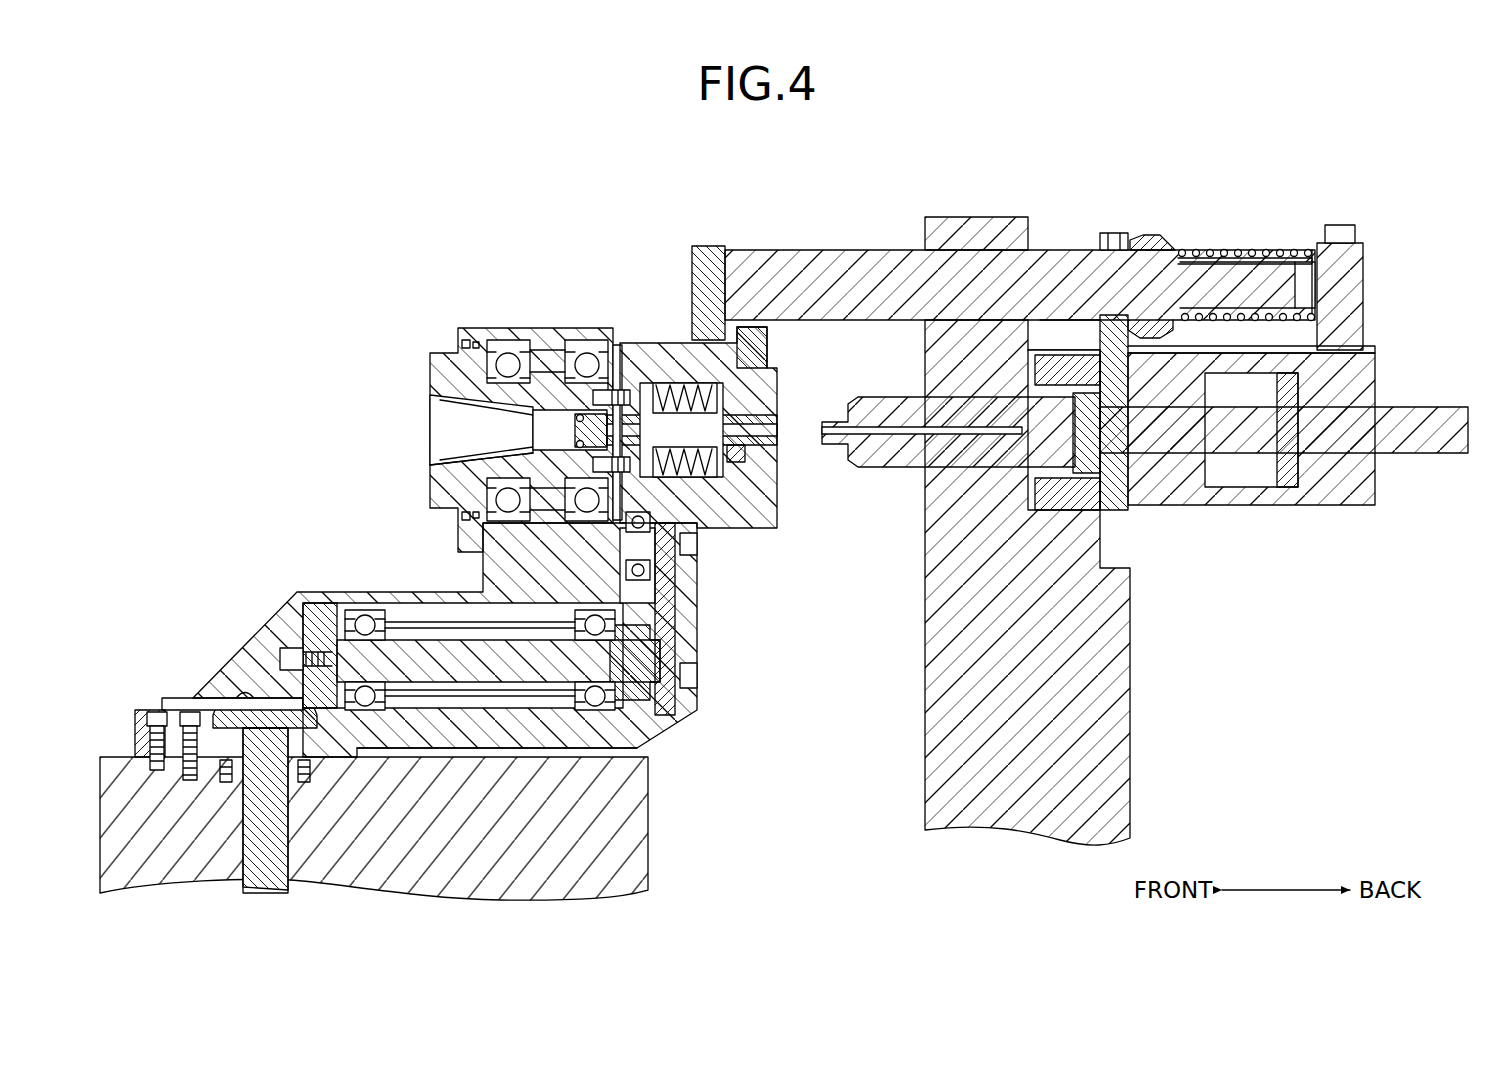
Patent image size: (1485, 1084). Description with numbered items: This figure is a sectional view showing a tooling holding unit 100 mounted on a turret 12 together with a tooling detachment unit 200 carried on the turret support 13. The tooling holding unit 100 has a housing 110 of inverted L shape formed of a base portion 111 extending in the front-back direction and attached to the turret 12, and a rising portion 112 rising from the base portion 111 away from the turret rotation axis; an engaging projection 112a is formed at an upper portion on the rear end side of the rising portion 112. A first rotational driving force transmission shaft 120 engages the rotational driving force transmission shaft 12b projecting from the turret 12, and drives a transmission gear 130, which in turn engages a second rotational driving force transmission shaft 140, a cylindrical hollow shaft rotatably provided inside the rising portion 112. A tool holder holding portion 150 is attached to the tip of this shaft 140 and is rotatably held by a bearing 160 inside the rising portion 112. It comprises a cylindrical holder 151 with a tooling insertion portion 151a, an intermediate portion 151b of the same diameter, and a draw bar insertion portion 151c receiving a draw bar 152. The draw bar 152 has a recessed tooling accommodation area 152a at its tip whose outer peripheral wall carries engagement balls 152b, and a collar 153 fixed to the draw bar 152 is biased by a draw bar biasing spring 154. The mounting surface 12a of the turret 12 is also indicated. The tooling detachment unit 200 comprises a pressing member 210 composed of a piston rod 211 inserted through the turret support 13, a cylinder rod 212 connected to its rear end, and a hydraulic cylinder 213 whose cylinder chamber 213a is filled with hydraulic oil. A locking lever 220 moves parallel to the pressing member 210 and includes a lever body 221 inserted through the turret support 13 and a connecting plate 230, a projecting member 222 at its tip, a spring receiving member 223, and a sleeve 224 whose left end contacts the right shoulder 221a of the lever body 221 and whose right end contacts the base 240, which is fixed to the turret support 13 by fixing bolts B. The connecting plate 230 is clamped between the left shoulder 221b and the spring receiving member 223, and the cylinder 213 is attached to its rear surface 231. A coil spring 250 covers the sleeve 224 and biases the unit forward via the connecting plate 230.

The tooling holding unit 100 is at (470, 186).
The housing 110 is at (546, 643).
The base portion 111 is at (557, 656).
The rising portion 112 is at (723, 443).
The engaging projection 112a is at (768, 338).
The first rotational driving force transmission shaft 120 is at (660, 652).
The transmission gear 130 is at (680, 585).
The second rotational driving force transmission shaft 140 is at (630, 345).
The tool holder holding portion 150 is at (590, 398).
The cylindrical holder 151 is at (492, 403).
The tooling insertion portion 151a is at (460, 428).
The intermediate portion 151b is at (455, 450).
The draw bar insertion portion 151c is at (610, 385).
The draw bar 152 is at (663, 352).
The tooling accommodation area 152a is at (596, 440).
The engagement balls 152b is at (590, 412).
The collar 153 is at (748, 458).
The draw bar biasing spring 154 is at (683, 385).
The bearing 160 is at (578, 430).
The turret 12 is at (406, 821).
The mounting surface 12a is at (640, 750).
The rotational driving force transmission shaft 12b is at (262, 880).
The turret support 13 is at (1358, 350).
The tooling detachment unit 200 is at (1079, 475).
The pressing member 210 is at (1145, 459).
The piston rod 211 is at (888, 455).
The cylinder rod 212 is at (1425, 418).
The cylinder 213 is at (1330, 495).
The cylinder chamber 213a is at (1238, 475).
The locking lever 220 is at (1008, 242).
The lever body 221 is at (1020, 255).
The right shoulder 221a is at (1190, 258).
The left shoulder 221b is at (1097, 252).
The projecting member 222 is at (712, 245).
The spring receiving member 223 is at (1140, 236).
The sleeve 224 is at (1305, 252).
The connecting plate 230 is at (1110, 234).
The rear surface 231 is at (1120, 502).
The base 240 is at (1348, 294).
The coil spring 250 is at (1266, 250).
The fixing bolts B is at (1340, 236).